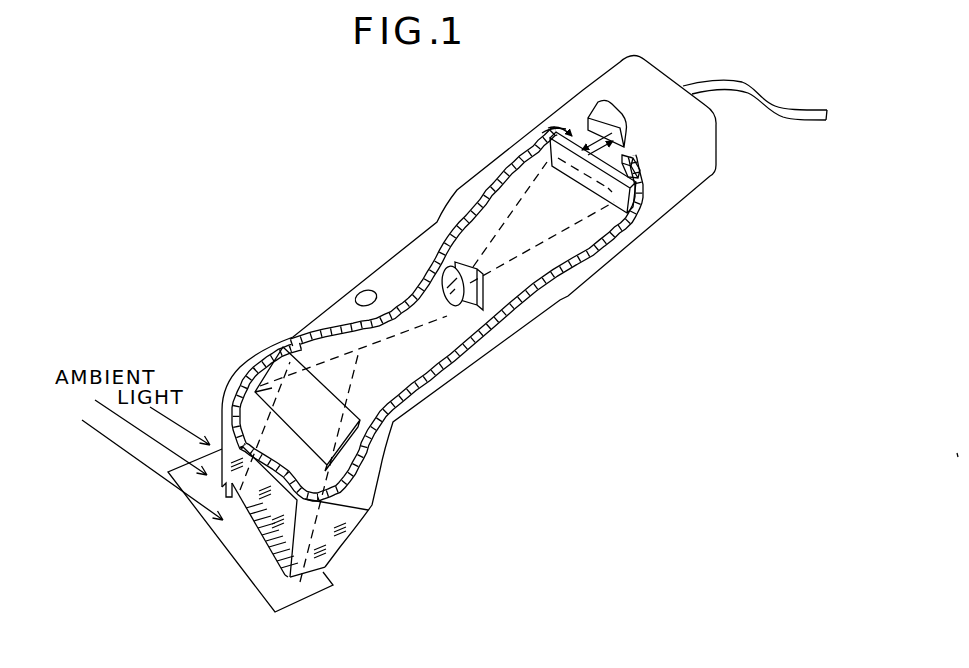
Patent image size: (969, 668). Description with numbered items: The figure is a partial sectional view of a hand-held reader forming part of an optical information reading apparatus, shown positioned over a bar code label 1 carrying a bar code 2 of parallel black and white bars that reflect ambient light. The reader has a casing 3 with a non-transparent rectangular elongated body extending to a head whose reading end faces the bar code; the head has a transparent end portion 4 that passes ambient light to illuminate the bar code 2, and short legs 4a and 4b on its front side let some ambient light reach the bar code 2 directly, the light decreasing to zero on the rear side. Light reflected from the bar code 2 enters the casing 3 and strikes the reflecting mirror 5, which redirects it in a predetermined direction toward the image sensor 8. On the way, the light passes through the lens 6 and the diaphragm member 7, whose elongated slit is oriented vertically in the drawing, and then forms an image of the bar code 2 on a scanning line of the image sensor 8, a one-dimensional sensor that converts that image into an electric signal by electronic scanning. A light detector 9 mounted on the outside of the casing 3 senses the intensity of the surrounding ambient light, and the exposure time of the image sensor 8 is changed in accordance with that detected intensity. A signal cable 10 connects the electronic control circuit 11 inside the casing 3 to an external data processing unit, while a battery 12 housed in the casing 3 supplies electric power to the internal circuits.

The bar code label 1 is at (295, 600).
The bar code 2 is at (250, 533).
The casing 3 is at (483, 173).
The transparent end portion 4 is at (342, 537).
The short leg 4a is at (225, 483).
The short leg 4b is at (286, 576).
The reflecting mirror 5 is at (283, 352).
The lens 6 is at (455, 300).
The diaphragm member 7 is at (482, 288).
The image sensor 8 is at (620, 212).
The light detector 9 is at (372, 291).
The signal cable 10 is at (730, 78).
The electronic control circuit 11 is at (598, 117).
The battery 12 is at (642, 180).